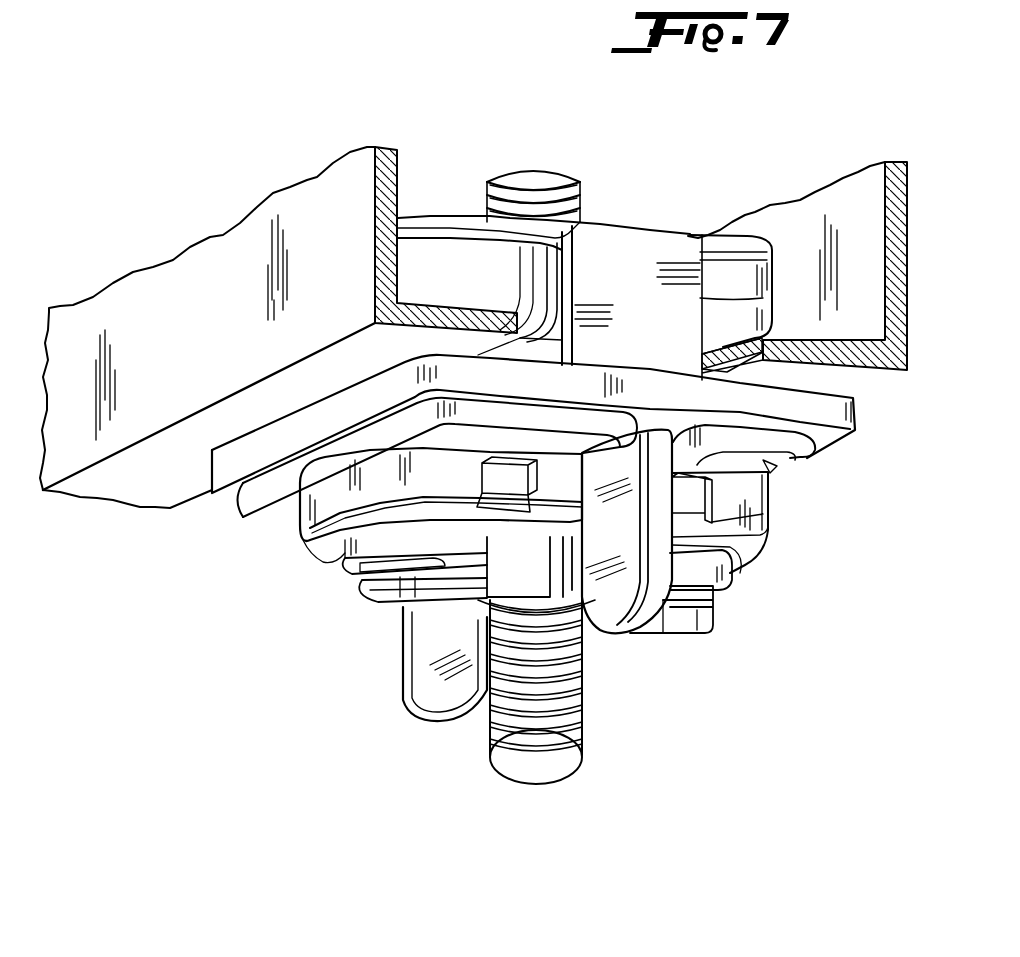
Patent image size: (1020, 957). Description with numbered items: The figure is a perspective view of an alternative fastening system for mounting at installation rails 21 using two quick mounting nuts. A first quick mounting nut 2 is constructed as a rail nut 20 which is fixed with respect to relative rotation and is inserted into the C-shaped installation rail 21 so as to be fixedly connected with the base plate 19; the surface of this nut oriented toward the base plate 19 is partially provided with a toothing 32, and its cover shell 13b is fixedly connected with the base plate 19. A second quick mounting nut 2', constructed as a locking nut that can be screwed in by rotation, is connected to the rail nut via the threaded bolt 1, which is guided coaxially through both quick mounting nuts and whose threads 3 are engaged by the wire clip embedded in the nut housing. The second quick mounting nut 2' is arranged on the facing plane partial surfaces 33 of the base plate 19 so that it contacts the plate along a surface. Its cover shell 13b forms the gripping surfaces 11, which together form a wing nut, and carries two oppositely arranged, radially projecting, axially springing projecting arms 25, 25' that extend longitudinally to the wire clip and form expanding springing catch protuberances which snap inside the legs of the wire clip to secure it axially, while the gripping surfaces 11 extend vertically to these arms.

The threaded bolt 1 is at (537, 773).
The first quick mounting nut 2 is at (243, 327).
The rail nut 20 is at (641, 263).
The second quick mounting nut 2' is at (527, 505).
The threads 3 is at (588, 723).
The gripping surfaces 11 is at (611, 617).
The cover shell 13b is at (322, 548).
The base plate 19 is at (832, 407).
The installation rail 21 is at (375, 237).
The projecting arm 25 is at (671, 642).
The projecting arm 25' is at (415, 637).
The toothing 32 is at (717, 347).
The plane partial surfaces 33 is at (474, 437).